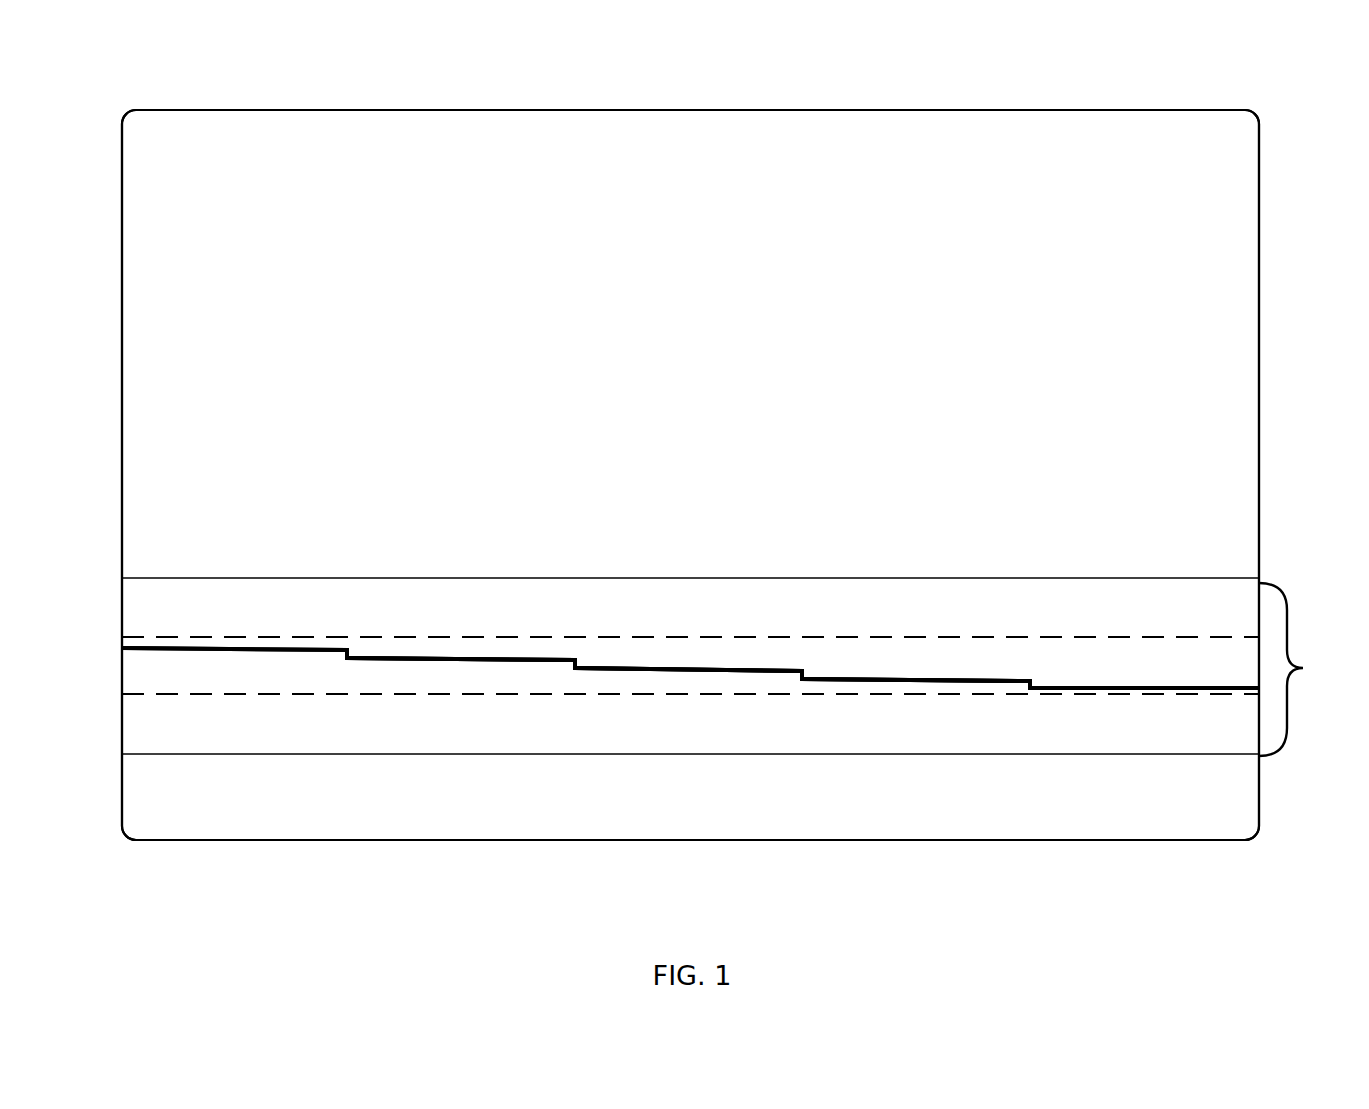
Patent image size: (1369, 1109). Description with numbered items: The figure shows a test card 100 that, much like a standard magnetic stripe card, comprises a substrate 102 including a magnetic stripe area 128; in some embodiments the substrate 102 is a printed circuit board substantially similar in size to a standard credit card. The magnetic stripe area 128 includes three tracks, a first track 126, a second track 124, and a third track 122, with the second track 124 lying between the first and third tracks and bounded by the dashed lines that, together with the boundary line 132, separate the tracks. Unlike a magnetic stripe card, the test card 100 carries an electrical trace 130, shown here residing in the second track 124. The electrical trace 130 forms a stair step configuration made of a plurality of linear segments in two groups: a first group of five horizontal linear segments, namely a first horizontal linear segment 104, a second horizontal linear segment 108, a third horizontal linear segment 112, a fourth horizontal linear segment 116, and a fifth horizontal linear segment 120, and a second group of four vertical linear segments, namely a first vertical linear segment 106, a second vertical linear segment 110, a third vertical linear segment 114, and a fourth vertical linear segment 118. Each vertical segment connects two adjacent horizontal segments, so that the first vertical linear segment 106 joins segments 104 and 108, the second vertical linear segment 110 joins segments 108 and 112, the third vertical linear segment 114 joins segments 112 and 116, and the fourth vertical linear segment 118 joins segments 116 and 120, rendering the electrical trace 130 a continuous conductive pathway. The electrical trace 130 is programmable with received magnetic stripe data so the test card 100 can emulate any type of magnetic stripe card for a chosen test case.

The test card 100 is at (114, 84).
The substrate 102 is at (122, 178).
The first horizontal linear segment 104 is at (281, 645).
The first vertical linear segment 106 is at (346, 650).
The second horizontal linear segment 108 is at (461, 656).
The second vertical linear segment 110 is at (574, 664).
The third horizontal linear segment 112 is at (698, 667).
The third vertical linear segment 114 is at (804, 668).
The fourth horizontal linear segment 116 is at (935, 678).
The fourth vertical linear segment 118 is at (1031, 679).
The fifth horizontal linear segment 120 is at (1151, 686).
The third track 122 is at (122, 602).
The second track 124 is at (122, 677).
The first track 126 is at (122, 725).
The magnetic stripe area 128 is at (1303, 668).
The electrical trace 130 is at (574, 670).
The upper dashed boundary 132 is at (122, 647).